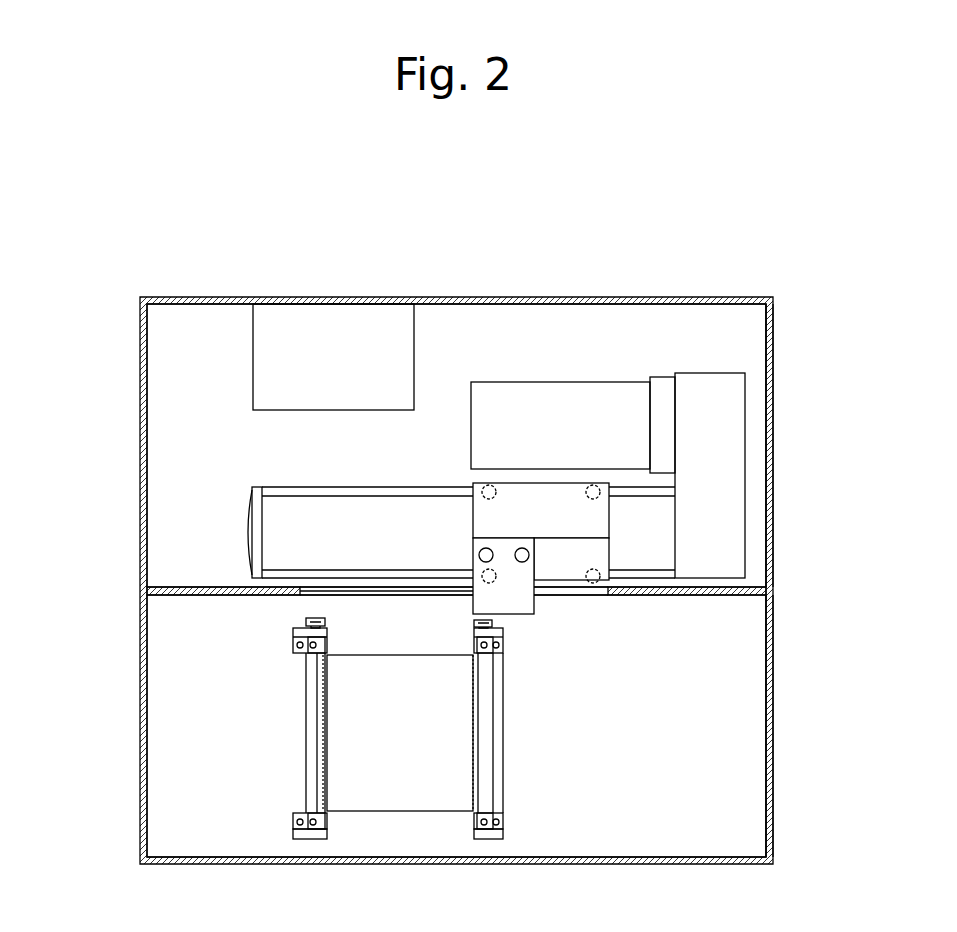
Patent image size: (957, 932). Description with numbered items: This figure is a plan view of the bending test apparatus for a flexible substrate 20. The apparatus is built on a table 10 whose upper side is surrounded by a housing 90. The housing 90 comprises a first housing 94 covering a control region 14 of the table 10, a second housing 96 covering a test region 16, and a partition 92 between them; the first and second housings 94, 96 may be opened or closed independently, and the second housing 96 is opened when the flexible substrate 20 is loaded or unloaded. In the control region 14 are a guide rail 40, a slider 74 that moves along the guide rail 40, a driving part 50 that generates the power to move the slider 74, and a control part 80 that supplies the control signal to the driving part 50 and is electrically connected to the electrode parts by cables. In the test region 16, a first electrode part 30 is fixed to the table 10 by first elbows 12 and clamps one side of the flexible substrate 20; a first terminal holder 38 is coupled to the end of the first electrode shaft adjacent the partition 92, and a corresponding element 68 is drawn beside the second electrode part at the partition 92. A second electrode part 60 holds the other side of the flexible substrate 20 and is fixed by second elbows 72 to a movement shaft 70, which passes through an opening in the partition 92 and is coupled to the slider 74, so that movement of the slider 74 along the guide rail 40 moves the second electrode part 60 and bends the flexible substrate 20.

The table 10 is at (70, 522).
The control region 14 is at (163, 528).
The test region 16 is at (163, 635).
The partition 92 is at (708, 593).
The housing 90 is at (838, 448).
The first housing 94 is at (775, 457).
The second housing 96 is at (775, 723).
The control part 80 is at (367, 322).
The driving part 50 is at (568, 395).
The guide rail 40 is at (432, 505).
The slider 74 is at (560, 525).
The first terminal holder 38 is at (304, 622).
The stopper 68 is at (492, 623).
The first elbows 12 is at (310, 839).
The second elbows 72 is at (489, 839).
The first electrode part 30 is at (310, 762).
The second electrode part 60 is at (488, 762).
The movement shaft 70 is at (498, 708).
The flexible substrate 20 is at (405, 800).